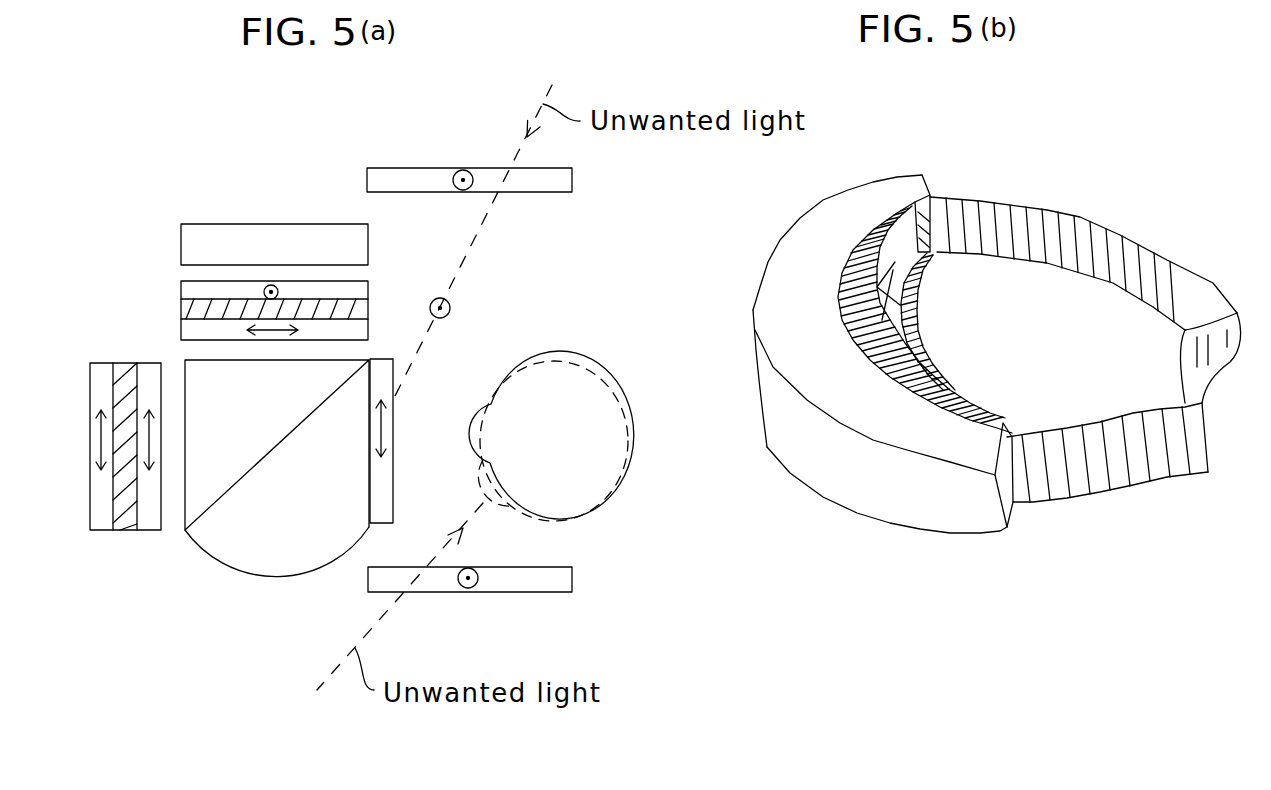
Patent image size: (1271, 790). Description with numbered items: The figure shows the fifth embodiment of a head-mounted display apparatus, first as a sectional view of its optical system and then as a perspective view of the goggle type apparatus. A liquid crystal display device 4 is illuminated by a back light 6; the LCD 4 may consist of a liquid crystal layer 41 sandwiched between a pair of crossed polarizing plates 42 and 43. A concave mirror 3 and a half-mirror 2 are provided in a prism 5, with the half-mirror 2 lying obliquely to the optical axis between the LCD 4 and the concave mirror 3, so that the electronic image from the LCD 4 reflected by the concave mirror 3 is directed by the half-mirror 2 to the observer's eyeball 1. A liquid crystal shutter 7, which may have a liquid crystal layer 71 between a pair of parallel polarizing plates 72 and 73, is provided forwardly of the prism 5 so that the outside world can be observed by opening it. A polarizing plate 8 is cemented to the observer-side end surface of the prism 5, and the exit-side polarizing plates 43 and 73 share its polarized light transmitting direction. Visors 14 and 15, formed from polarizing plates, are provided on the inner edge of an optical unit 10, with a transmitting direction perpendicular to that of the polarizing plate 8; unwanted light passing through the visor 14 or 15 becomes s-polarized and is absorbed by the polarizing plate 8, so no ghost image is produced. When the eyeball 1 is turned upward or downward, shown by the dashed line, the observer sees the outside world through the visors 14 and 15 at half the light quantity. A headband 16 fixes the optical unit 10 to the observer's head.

In FIG. 5A, the eyeball 1 is at (593, 480).
In FIG. 5A, the half-mirror 2 is at (213, 510).
In FIG. 5A, the concave mirror 3 is at (298, 576).
In FIG. 5A, the liquid crystal display device 4 is at (116, 283).
In FIG. 5A, the liquid crystal layer 41 is at (185, 313).
In FIG. 5A, the polarizing plate 42 is at (185, 292).
In FIG. 5A, the exit-side polarizing plate 43 is at (185, 330).
In FIG. 5A, the prism 5 is at (253, 556).
In FIG. 5A, the back light 6 is at (181, 245).
In FIG. 5A, the liquid crystal shutter 7 is at (170, 590).
In FIG. 5A, the liquid crystal layer 71 is at (131, 530).
In FIG. 5A, the polarizing plate 72 is at (103, 530).
In FIG. 5A, the exit-side polarizing plate 73 is at (157, 530).
In FIG. 5A, the polarizing plate 8 is at (393, 512).
In FIG. 5B, the optical unit 10 is at (878, 505).
In FIG. 5A, the visor 14 is at (572, 177).
In FIG. 5B, the visor 14 is at (870, 250).
In FIG. 5A, the visor 15 is at (540, 592).
In FIG. 5B, the visor 15 is at (928, 348).
In FIG. 5B, the headband 16 is at (1167, 477).